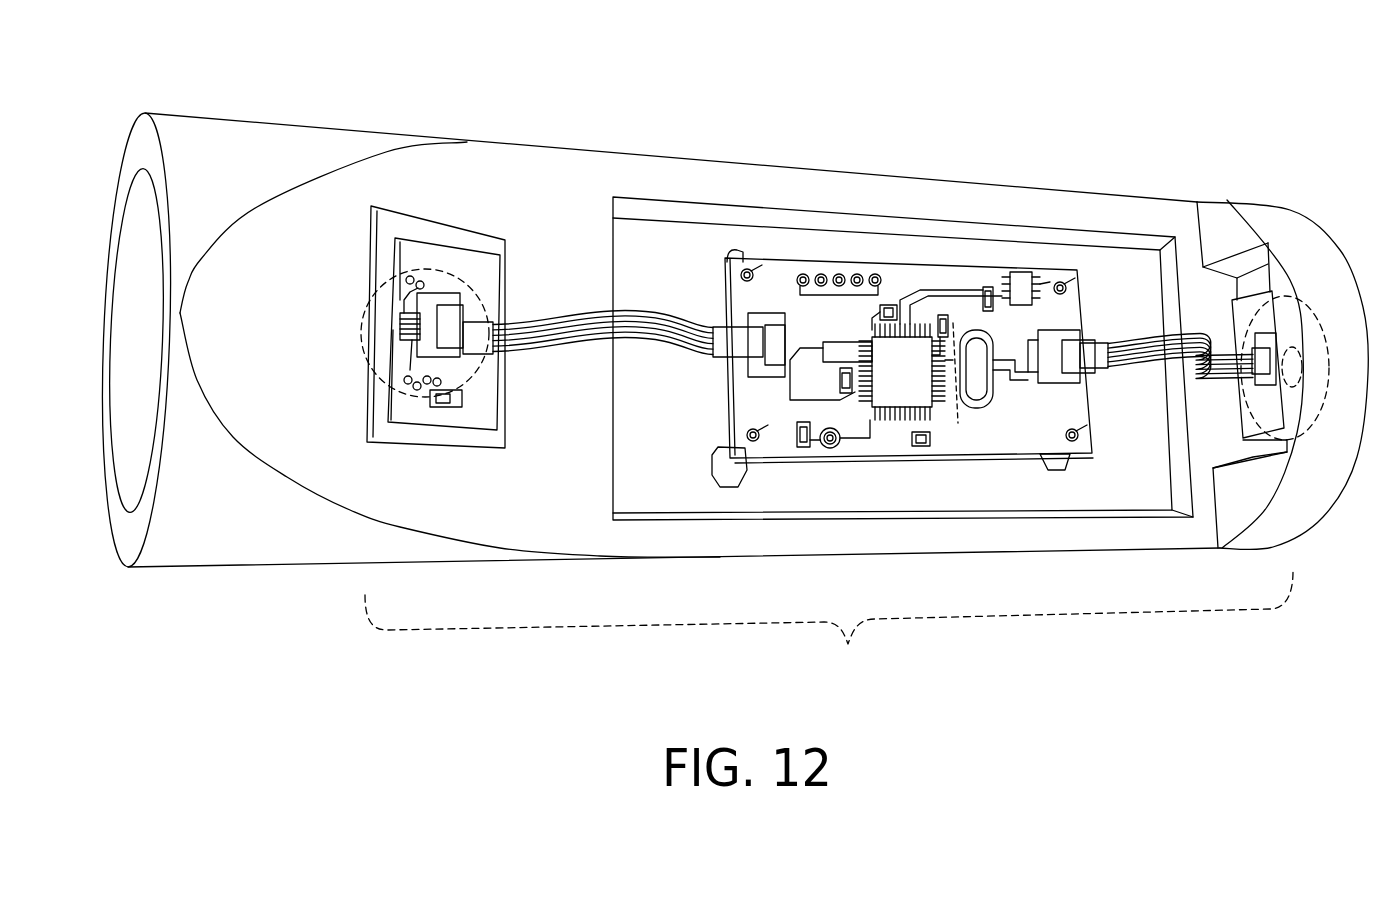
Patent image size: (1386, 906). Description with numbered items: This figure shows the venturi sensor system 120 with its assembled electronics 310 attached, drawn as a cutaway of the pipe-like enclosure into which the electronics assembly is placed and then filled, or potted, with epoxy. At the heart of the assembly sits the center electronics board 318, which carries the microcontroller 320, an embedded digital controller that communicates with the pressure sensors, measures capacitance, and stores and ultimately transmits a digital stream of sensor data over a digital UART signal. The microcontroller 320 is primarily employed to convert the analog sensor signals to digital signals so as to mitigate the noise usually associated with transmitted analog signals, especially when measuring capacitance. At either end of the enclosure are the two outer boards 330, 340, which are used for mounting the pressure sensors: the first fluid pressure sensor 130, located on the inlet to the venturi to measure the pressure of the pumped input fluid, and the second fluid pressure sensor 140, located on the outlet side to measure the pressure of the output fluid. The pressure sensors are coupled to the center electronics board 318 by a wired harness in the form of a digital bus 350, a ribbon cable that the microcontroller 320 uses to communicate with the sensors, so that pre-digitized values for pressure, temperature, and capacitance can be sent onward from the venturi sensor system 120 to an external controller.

The 2-dimensional venturi 120 is at (1064, 134).
The first fluid pressure sensor 130 is at (1293, 367).
The second fluid pressure sensor 140 is at (363, 333).
The assembled electronics 310 is at (848, 644).
The center electronics board 318 is at (987, 440).
The microcontroller 320 is at (905, 372).
The outer board 330 is at (1248, 345).
The outer board 340 is at (472, 262).
The digital bus 350 is at (576, 325).